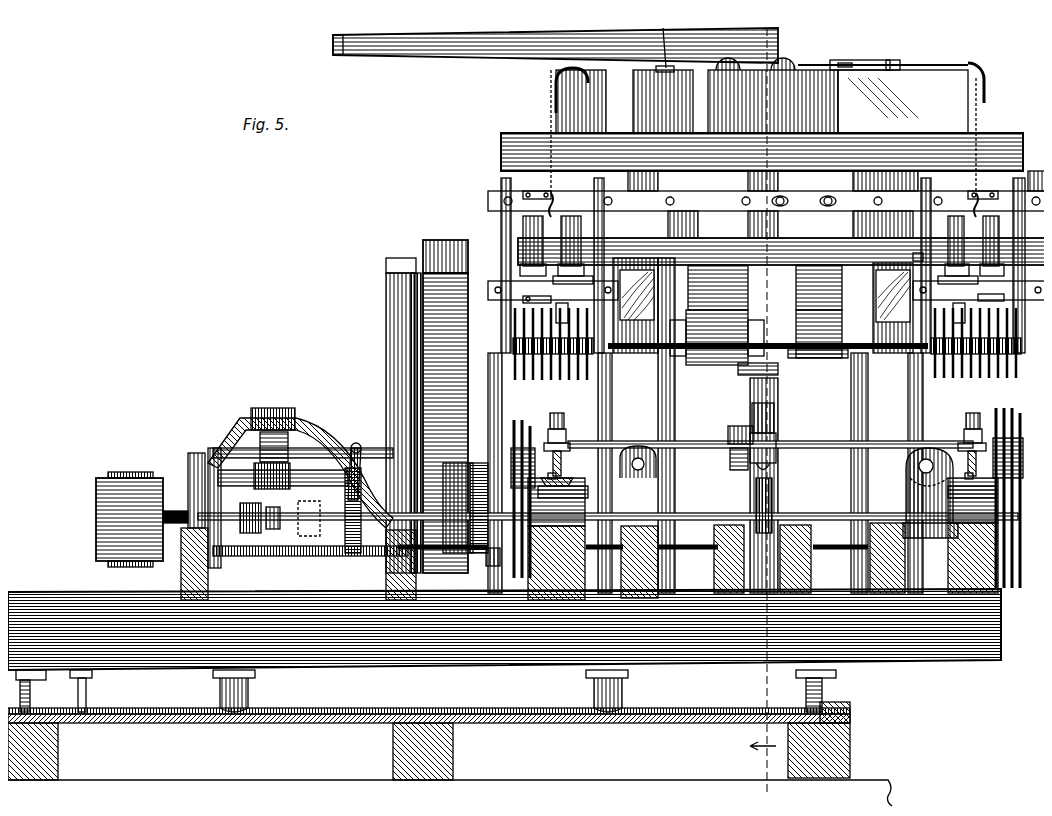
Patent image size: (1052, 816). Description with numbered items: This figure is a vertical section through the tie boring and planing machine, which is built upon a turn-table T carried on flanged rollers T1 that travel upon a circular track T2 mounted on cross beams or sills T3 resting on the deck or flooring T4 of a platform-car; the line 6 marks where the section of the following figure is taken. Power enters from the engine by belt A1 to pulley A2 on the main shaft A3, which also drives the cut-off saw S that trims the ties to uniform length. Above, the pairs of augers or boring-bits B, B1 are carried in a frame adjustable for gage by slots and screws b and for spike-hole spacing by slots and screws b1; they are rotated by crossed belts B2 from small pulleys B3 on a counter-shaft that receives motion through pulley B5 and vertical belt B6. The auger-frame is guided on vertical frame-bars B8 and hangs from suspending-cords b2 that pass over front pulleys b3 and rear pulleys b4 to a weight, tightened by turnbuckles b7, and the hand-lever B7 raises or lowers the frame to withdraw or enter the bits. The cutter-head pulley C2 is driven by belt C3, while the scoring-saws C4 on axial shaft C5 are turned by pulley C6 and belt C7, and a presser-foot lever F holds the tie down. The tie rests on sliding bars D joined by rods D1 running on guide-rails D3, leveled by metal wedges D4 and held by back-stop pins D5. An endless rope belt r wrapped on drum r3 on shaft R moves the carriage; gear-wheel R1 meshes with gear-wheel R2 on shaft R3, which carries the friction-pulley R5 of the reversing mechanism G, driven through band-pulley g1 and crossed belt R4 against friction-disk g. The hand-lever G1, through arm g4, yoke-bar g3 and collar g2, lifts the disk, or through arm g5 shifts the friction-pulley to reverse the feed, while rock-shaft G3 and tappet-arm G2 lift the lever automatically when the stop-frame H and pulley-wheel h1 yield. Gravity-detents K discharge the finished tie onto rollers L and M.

The turn-table T is at (504, 629).
The flanged rollers T1 is at (846, 676).
The circular track T2 is at (426, 702).
The cross beams or sills T3 is at (447, 748).
The deck or flooring T4 is at (606, 772).
The section line 6 is at (763, 408).
The hand-lever B7 is at (555, 59).
The front pulleys b3 is at (546, 70).
The rear pulleys b4 is at (720, 58).
The turnbuckles b7 is at (855, 52).
The slots and screws b1 is at (486, 334).
The suspending-cords b2 is at (546, 190).
The slots and screws b is at (776, 190).
The augers or boring-bits B1 is at (600, 203).
The augers or boring-bits B is at (525, 232).
The crossed belts B2 is at (545, 272).
The pulley B5 is at (425, 238).
The vertical belt B6 is at (415, 320).
The vertical frame-bars B8 is at (860, 342).
The cut-off saw S is at (403, 396).
The belt C7 is at (718, 287).
The pulley C6 is at (717, 337).
The belt C3 is at (819, 287).
The pulley C2 is at (780, 335).
The axial shaft C5 is at (806, 350).
The scoring-saws C4 is at (556, 405).
The presser-foot lever F is at (749, 378).
The guide-rails D3 is at (935, 470).
The shaft R is at (690, 505).
The endless rope belt r is at (706, 542).
The drum r3 is at (766, 498).
The U-shaped frame H is at (790, 420).
The pulley-wheel h1 is at (731, 461).
The rods D1 is at (800, 436).
The dead-roller L is at (652, 452).
The positively-actuated roller M is at (895, 490).
The sliding bars D is at (562, 470).
The metal wedges D4 is at (960, 410).
The back-stop pins D5 is at (544, 405).
The gravity-detents K is at (506, 416).
The gear-wheel R1 is at (445, 460).
The rock-shaft G3 is at (482, 560).
The main shaft A3 is at (180, 452).
The belt A1 is at (118, 464).
The pulley A2 is at (100, 505).
The reversing mechanism G is at (300, 481).
The collar g2 is at (282, 434).
The band-pulley g1 is at (284, 466).
The crossed belt R4 is at (303, 473).
The yoke-bar g3 is at (326, 445).
The arm g4 is at (362, 437).
The hand-lever G1 is at (352, 470).
The friction-disk g is at (314, 514).
The friction-pulley R5 is at (242, 528).
The arm g5 is at (266, 524).
The small pulleys B3 is at (320, 548).
The tappet-arm G2 is at (348, 548).
The gear-wheel R2 is at (905, 248).
The shaft R3 is at (1023, 408).